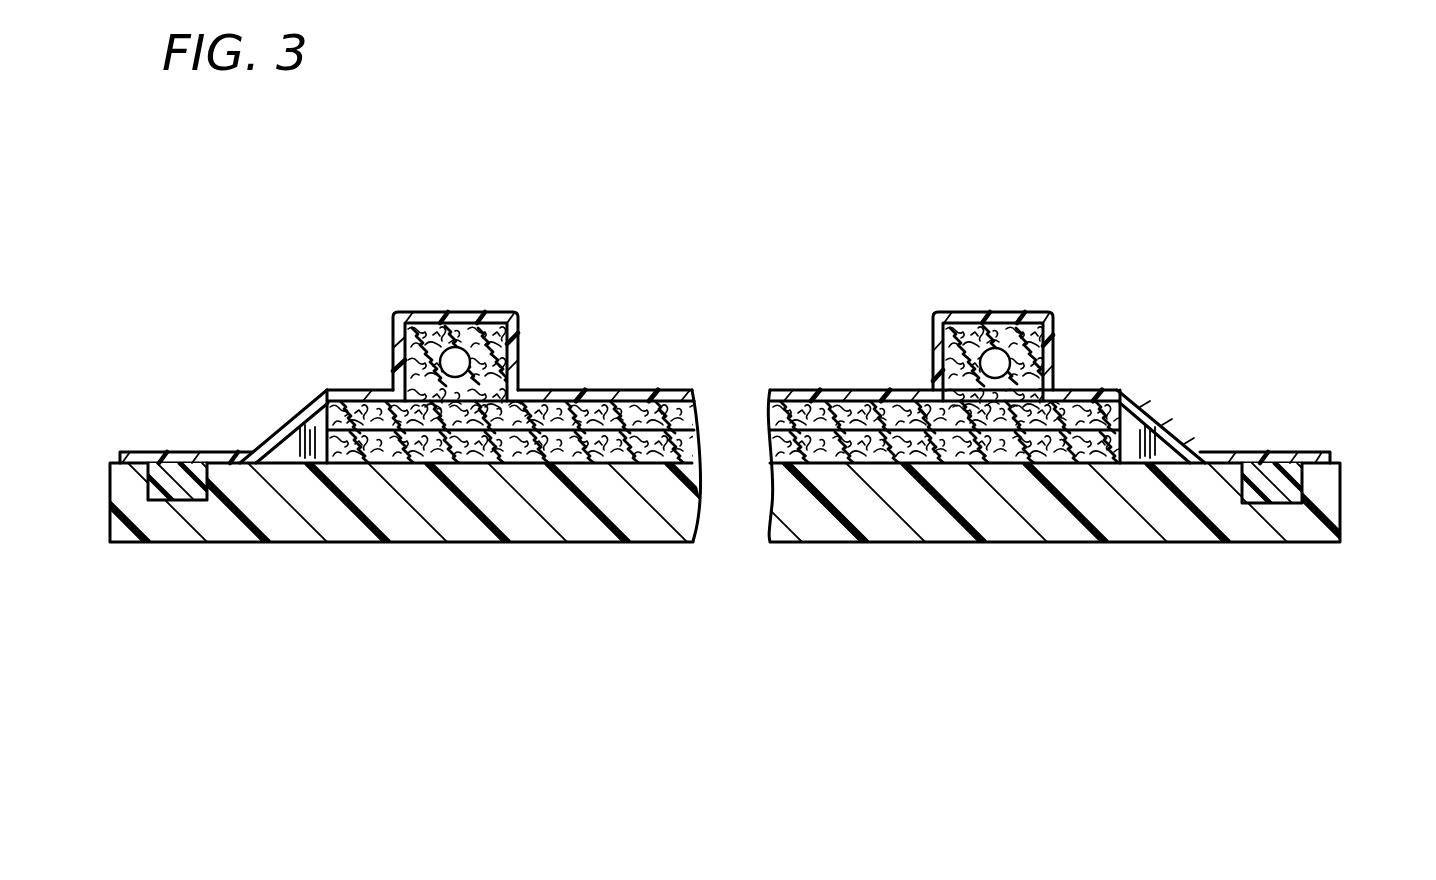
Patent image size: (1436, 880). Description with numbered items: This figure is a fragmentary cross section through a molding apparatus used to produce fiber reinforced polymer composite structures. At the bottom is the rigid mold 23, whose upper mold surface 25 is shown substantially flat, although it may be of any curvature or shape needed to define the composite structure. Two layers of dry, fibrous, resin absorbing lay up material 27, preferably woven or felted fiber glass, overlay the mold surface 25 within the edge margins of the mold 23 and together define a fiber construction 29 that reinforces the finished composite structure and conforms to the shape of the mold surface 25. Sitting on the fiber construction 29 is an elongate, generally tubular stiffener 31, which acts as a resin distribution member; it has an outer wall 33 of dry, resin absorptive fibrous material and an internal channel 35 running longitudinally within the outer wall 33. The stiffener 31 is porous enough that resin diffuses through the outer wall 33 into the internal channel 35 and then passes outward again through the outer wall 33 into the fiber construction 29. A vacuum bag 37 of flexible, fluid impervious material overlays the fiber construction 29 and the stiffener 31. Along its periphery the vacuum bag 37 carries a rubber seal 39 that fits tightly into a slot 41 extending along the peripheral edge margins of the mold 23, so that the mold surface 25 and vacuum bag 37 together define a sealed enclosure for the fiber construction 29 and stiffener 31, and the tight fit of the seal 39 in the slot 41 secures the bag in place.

The rigid mold 23 is at (1083, 543).
The mold surface 25 is at (1188, 454).
The lay up material 27 is at (1128, 397).
The fiber construction 29 is at (882, 470).
The stiffener 31 is at (470, 324).
The outer wall 33 is at (498, 340).
The internal channel 35 is at (452, 347).
The vacuum bag 37 is at (605, 392).
The rubber seal 39 is at (1302, 478).
The slot 41 is at (1268, 488).